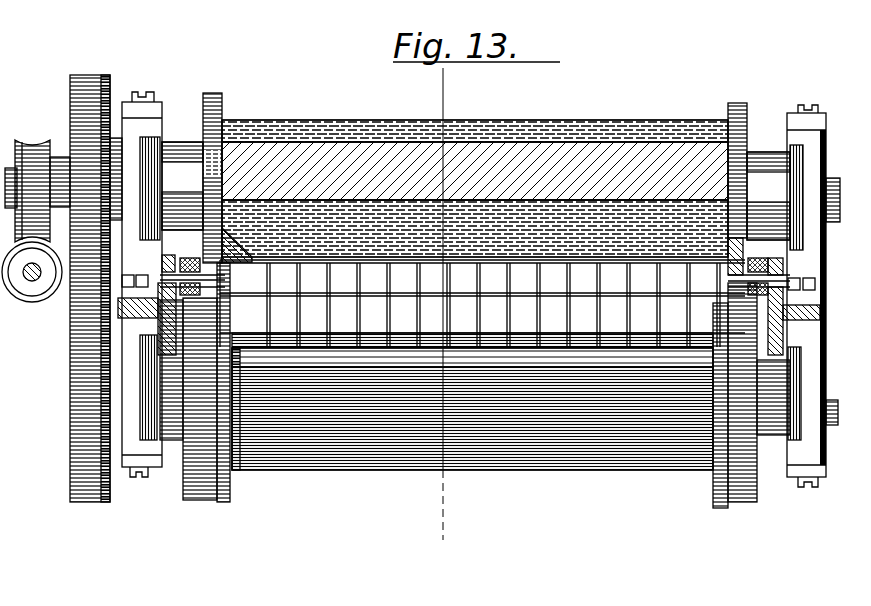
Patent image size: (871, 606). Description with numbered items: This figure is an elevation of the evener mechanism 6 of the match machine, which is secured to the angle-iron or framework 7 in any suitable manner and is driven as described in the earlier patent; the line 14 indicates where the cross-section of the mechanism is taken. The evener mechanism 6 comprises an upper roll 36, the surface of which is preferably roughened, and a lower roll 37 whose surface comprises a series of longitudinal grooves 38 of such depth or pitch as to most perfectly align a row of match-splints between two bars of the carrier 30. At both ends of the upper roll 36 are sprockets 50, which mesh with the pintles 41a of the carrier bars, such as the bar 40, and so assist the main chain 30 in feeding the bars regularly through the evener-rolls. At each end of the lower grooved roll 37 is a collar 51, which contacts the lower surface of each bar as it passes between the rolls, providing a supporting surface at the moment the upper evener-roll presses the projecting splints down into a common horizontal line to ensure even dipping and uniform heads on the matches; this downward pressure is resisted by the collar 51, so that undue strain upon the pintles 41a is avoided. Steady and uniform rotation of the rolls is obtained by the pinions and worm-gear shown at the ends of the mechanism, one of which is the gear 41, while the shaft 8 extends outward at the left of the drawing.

The evener mechanism 6 is at (829, 262).
The angle-iron or framework 7 is at (822, 316).
The drive shaft 8 is at (35, 292).
The section line 14- 14 is at (463, 105).
The carrier 30 is at (190, 258).
The upper roll 36 is at (475, 191).
The lower roll 37 is at (555, 470).
The longitudinal grooves 38 is at (308, 470).
The bar 40 is at (280, 283).
The gear 41 is at (55, 288).
The pintles 41a is at (222, 282).
The sprockets 50 is at (226, 90).
The collar 51 is at (719, 506).